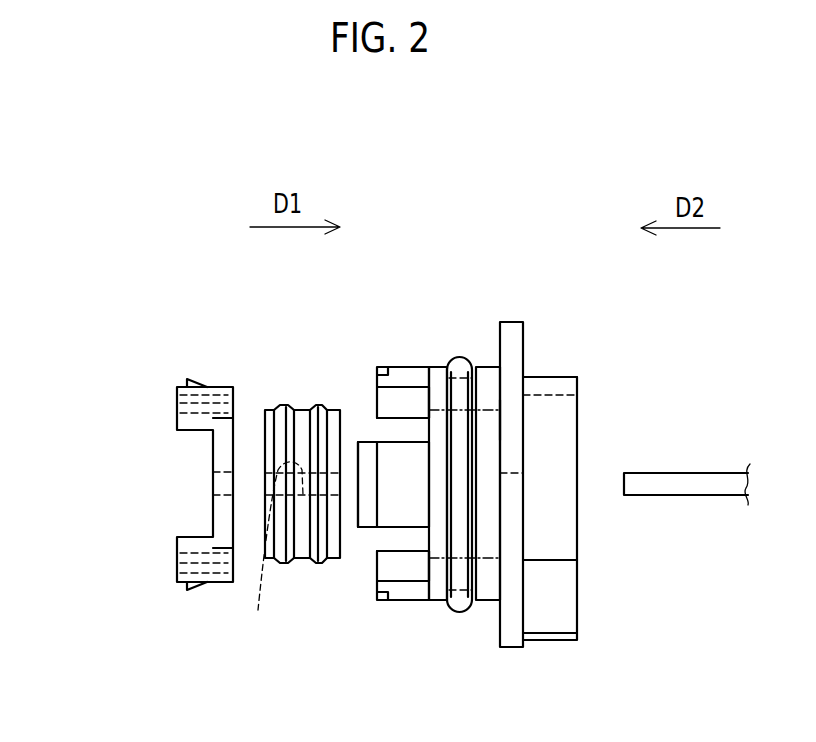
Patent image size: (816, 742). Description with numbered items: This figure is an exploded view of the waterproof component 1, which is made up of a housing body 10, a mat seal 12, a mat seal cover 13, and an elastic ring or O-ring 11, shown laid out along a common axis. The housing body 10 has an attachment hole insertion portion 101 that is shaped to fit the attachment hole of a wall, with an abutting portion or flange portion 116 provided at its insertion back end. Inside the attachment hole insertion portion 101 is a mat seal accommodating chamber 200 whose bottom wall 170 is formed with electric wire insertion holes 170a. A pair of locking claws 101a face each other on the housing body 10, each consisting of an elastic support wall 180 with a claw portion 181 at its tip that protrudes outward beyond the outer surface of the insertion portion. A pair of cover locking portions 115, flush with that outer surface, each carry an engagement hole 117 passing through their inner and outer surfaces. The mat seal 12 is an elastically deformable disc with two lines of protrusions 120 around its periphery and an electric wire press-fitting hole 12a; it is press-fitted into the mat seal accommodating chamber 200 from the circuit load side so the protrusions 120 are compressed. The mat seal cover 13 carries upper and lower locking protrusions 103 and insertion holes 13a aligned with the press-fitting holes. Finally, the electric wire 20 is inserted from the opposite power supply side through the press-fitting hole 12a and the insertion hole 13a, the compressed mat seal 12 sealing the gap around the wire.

The waterproof component 1 is at (409, 454).
The housing body 10 is at (511, 322).
The elastic ring (O-ring) 11 is at (455, 613).
The mat seal 12 is at (271, 462).
The electric wire press-fitting hole 12a is at (249, 551).
The mat seal cover 13 is at (183, 482).
The insertion hole 13a is at (222, 500).
The electric wire 20 is at (680, 482).
The attachment hole insertion portion 101 is at (477, 366).
The locking claw 101a is at (376, 501).
The locking protrusion 103 is at (187, 380).
The cover locking portion 115 is at (415, 412).
The abutting portion (flange portion) 116 is at (500, 634).
The engagement hole 117 is at (386, 370).
The protrusion 120 is at (282, 404).
The bottom wall 170 is at (497, 520).
The electric wire insertion hole 170a is at (520, 496).
The elastic support wall 180 is at (398, 480).
The claw portion 181 is at (366, 462).
The mat seal accommodating chamber 200 is at (491, 421).